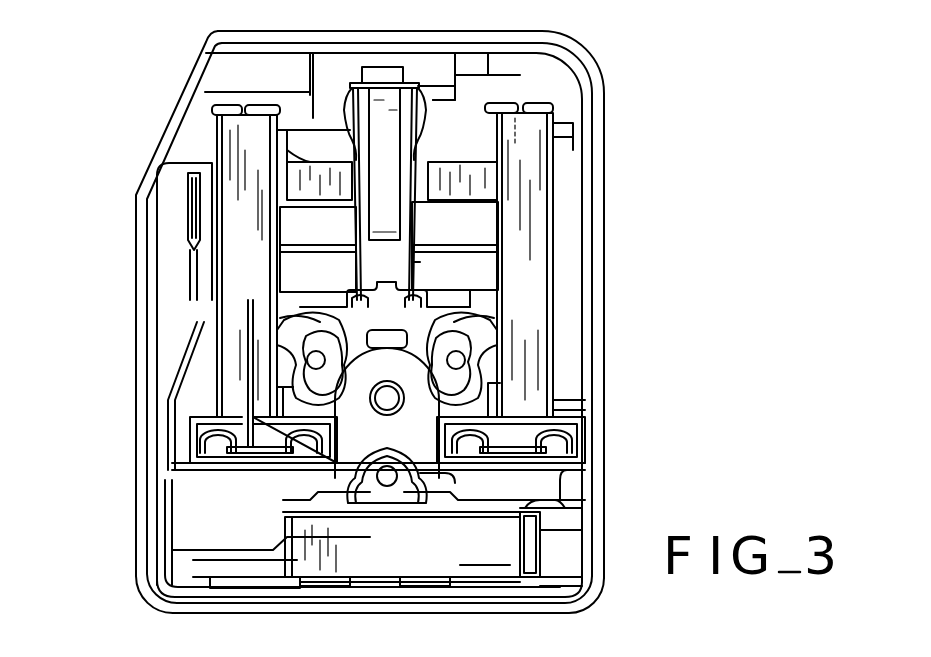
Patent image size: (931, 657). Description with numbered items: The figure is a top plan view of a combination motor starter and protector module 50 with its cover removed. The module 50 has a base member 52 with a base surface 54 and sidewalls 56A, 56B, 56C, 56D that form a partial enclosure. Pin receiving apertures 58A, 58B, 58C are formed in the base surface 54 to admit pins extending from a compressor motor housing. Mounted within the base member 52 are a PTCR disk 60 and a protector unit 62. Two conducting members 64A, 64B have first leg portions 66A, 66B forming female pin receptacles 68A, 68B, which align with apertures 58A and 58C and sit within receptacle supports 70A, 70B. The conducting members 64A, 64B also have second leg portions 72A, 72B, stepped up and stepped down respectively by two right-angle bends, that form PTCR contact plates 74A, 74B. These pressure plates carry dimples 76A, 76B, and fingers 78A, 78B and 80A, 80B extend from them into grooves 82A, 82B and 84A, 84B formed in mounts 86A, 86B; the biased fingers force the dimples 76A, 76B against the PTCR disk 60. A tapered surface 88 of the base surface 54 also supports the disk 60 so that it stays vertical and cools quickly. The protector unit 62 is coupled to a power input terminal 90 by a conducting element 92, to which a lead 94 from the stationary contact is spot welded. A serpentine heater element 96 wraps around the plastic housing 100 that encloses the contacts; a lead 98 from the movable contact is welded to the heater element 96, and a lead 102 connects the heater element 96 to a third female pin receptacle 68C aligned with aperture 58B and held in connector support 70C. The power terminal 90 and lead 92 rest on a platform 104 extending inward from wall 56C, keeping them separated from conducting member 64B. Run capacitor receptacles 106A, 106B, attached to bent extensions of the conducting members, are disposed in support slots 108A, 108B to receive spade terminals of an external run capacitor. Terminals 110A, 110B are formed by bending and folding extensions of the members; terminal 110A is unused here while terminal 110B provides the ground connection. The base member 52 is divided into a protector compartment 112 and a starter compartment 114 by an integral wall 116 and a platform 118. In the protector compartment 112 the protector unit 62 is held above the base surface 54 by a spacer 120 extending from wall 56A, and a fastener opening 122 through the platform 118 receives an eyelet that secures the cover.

The combination motor starter and protector module 50 is at (663, 88).
The base member 52 is at (605, 320).
The base surface 54 is at (316, 287).
The sidewall 56A is at (600, 478).
The sidewall 56B is at (467, 615).
The sidewall 56C is at (160, 422).
The sidewall 56D is at (445, 40).
The pin receiving aperture 58A is at (467, 356).
The pin receiving aperture 58B is at (400, 490).
The pin receiving aperture 58C is at (300, 357).
The PTCR disk 60 is at (433, 120).
The protector unit 62 is at (495, 558).
The conducting member 64A is at (535, 243).
The conducting member 64B is at (165, 225).
The first leg portion 66A is at (485, 388).
The first leg portion 66B is at (267, 398).
The female pin receptacle 68A is at (467, 370).
The female pin receptacle 68B is at (290, 374).
The female pin receptacle 68C is at (340, 476).
The receptacle support 70A is at (448, 333).
The receptacle support 70B is at (293, 322).
The connector support 70C is at (428, 520).
The second leg portion 72A is at (470, 148).
The second leg portion 72B is at (300, 163).
The PTCR contact plate 74A is at (420, 133).
The PTCR contact plate 74B is at (285, 243).
The dimple 76A is at (405, 192).
The dimple 76B is at (277, 130).
The finger 78A is at (443, 107).
The finger 78B is at (413, 262).
The finger 80A is at (345, 185).
The finger 80B is at (277, 262).
The groove 82A is at (437, 118).
The groove 82B is at (383, 286).
The groove 84A is at (372, 68).
The groove 84B is at (347, 302).
The mount 86A is at (388, 62).
The mount 86B is at (277, 310).
The tapered surface 88 is at (462, 239).
The power input terminal 90 is at (188, 204).
The conducting element 92 is at (172, 466).
The lead 94 is at (185, 500).
The heater element 96 is at (570, 530).
The lead 98 is at (272, 575).
The housing 100 is at (418, 562).
The lead 102 is at (305, 496).
The platform 104 is at (167, 236).
The run capacitor receptacle 106A is at (580, 440).
The run capacitor receptacle 106B is at (170, 478).
The support slot 108A is at (590, 450).
The support slot 108B is at (190, 447).
The terminal 110A is at (553, 107).
The terminal 110B is at (240, 106).
The protector compartment 112 is at (577, 583).
The starter compartment 114 is at (455, 97).
The integral wall 116 is at (570, 473).
The platform 118 is at (433, 471).
The spacer 120 is at (563, 550).
The fastener opening 122 is at (385, 405).